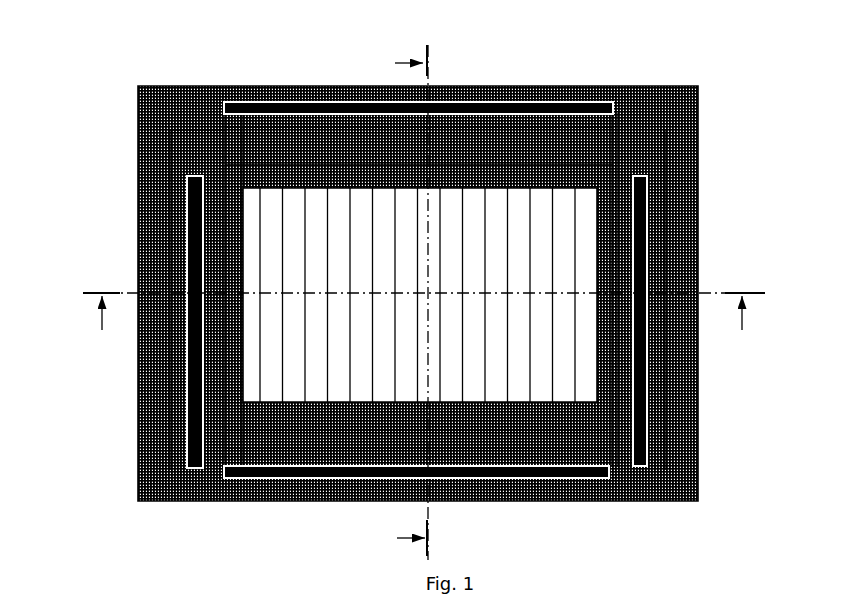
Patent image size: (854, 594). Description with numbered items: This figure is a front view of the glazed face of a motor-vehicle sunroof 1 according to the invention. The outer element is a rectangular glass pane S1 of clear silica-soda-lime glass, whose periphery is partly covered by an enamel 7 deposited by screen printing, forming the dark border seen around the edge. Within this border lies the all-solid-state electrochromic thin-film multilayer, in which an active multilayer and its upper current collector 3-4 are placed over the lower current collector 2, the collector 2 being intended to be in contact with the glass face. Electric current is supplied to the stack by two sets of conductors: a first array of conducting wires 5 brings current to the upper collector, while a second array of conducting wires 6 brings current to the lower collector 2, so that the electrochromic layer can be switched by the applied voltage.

The motor-vehicle sunroof 1 is at (135, 72).
The glass pane S1 is at (700, 102).
The first array of conducting wires 5 is at (295, 94).
The enamel 7 is at (160, 140).
The active multilayer and current collector 3-4 is at (620, 152).
The current collector 2 is at (660, 372).
The second array of conducting wires 6 is at (650, 447).